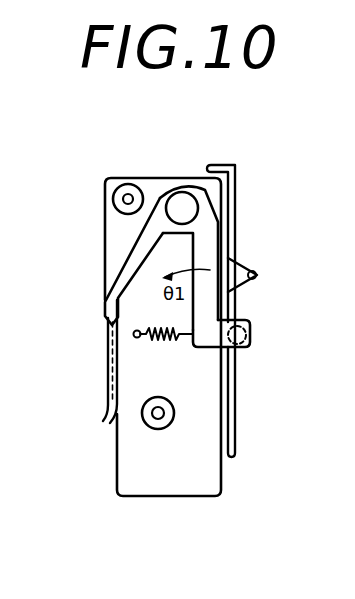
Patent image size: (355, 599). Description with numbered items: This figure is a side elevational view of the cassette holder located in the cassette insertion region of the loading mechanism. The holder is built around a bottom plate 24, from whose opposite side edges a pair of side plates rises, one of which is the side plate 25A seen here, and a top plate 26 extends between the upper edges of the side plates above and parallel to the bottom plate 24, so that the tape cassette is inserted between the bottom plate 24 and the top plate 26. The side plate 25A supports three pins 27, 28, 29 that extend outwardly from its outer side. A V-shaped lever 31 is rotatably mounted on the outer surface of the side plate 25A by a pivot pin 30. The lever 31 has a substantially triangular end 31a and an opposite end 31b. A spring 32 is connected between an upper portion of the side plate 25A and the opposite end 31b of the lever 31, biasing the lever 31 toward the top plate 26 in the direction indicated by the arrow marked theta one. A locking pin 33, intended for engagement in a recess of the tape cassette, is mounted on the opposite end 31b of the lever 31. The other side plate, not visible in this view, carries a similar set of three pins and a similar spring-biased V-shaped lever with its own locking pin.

The side plate 25A is at (121, 176).
The pin 27 is at (115, 205).
The pivot pin 30 is at (181, 206).
The V-shaped lever 31 is at (212, 233).
The triangular end 31a is at (105, 303).
The opposite end 31b is at (226, 350).
The bottom plate 24 is at (239, 180).
The pin 28 is at (257, 277).
The locking pin 33 is at (246, 343).
The top plate 26 is at (108, 338).
The spring 32 is at (165, 342).
The pin 29 is at (145, 422).